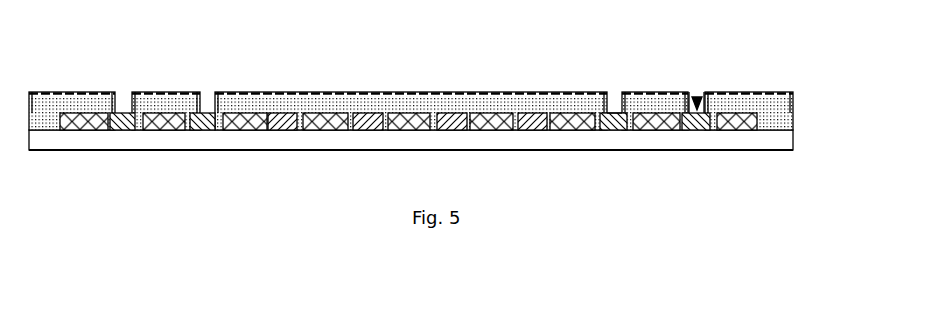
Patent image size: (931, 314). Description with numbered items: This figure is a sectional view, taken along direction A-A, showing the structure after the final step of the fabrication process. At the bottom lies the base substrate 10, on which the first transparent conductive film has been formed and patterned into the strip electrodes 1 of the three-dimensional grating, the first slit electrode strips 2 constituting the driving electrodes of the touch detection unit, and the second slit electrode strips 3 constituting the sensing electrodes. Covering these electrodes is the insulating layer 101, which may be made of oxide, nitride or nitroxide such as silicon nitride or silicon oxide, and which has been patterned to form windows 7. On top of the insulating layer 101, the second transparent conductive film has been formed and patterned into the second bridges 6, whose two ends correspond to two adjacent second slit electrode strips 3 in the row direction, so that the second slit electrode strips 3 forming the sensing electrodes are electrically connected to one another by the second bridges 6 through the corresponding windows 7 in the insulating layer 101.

The strip electrodes 1 is at (250, 112).
The first slit electrode strips 2 is at (367, 128).
The second slit electrode strips 3 is at (613, 112).
The second bridges 6 is at (160, 92).
The windows 7 is at (697, 97).
The base substrate 10 is at (780, 140).
The insulating layer 101 is at (446, 80).